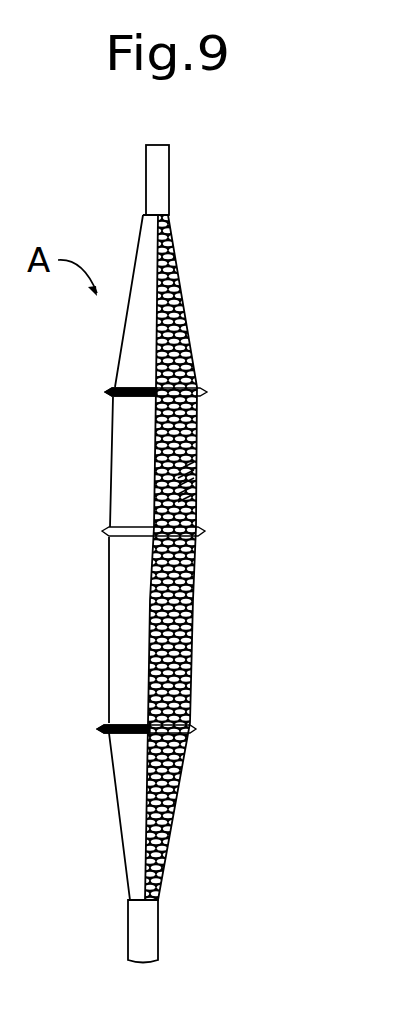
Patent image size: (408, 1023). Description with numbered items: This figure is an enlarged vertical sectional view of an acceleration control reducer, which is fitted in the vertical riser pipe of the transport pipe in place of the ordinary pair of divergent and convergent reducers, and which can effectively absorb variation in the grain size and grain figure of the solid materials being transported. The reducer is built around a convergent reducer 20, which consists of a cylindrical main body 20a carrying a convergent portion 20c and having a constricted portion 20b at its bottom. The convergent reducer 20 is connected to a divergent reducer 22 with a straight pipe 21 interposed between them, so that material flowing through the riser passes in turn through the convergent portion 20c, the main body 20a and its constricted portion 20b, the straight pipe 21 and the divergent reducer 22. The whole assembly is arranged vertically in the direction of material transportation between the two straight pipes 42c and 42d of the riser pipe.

The convergent reducer 20 is at (300, 382).
The cylindrical main body 20a is at (195, 433).
The constricted portion 20b is at (190, 490).
The convergent portion 20c is at (190, 342).
The straight pipe 21 is at (188, 633).
The divergent reducer 22 is at (183, 778).
The straight pipe 42c is at (150, 934).
The straight pipe 42d is at (160, 180).